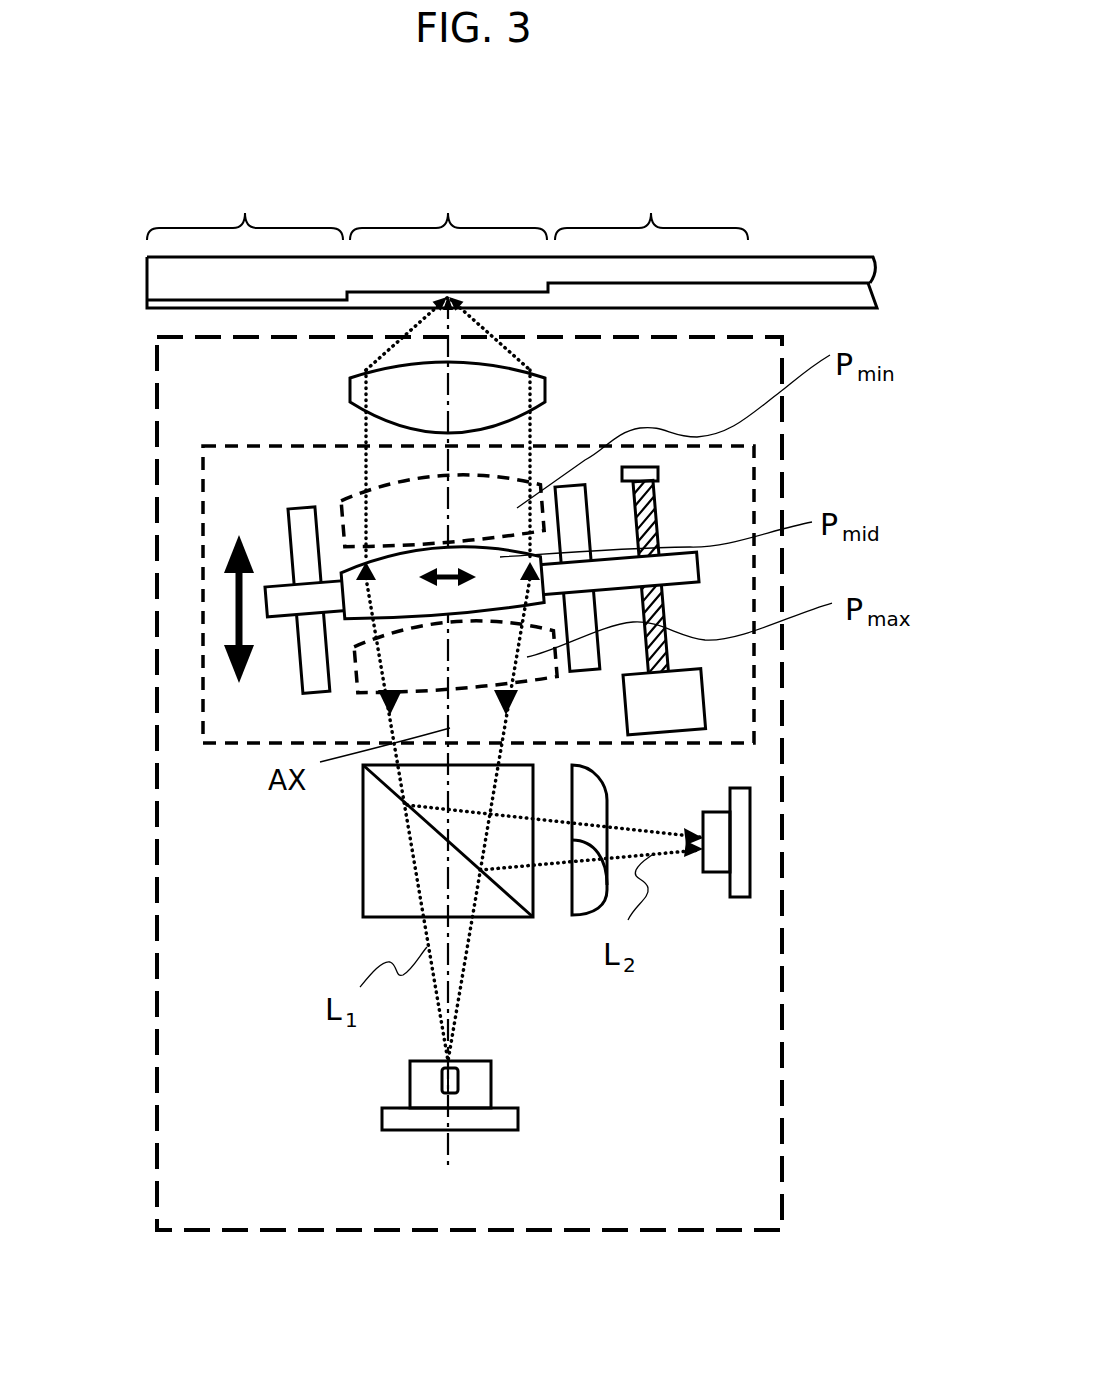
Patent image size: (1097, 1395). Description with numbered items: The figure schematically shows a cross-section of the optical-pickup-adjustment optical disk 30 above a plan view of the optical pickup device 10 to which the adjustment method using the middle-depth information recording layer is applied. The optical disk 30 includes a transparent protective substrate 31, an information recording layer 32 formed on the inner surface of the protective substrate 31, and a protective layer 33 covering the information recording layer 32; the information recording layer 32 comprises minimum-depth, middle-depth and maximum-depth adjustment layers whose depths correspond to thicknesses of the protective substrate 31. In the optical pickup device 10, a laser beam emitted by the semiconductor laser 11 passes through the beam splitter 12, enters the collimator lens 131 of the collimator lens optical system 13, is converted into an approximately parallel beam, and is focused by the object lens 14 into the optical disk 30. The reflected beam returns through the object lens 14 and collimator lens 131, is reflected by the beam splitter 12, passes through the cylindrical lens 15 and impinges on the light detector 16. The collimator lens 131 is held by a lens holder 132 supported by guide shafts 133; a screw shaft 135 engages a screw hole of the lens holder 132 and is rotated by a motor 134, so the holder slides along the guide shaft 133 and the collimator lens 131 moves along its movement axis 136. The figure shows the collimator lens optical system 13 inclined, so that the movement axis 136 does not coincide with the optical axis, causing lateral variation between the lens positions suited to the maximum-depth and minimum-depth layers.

The optical pickup device 10 is at (343, 1230).
The semiconductor laser 11 is at (440, 1078).
The beam splitter 12 is at (365, 872).
The collimator lens optical system 13 is at (247, 742).
The collimator lens 131 is at (340, 518).
The lens holder 132 is at (283, 602).
The guide shaft 133 is at (287, 540).
The motor 134 is at (707, 702).
The screw shaft 135 is at (660, 522).
The movement axis 136 is at (430, 464).
The object lens 14 is at (547, 393).
The cylindrical lens 15 is at (575, 907).
The light detector 16 is at (713, 855).
The optical-pickup-adjustment optical disk 30 is at (566, 190).
The protective substrate 31 is at (850, 298).
The information recording layer 32 is at (803, 283).
The protective layer 33 is at (745, 273).